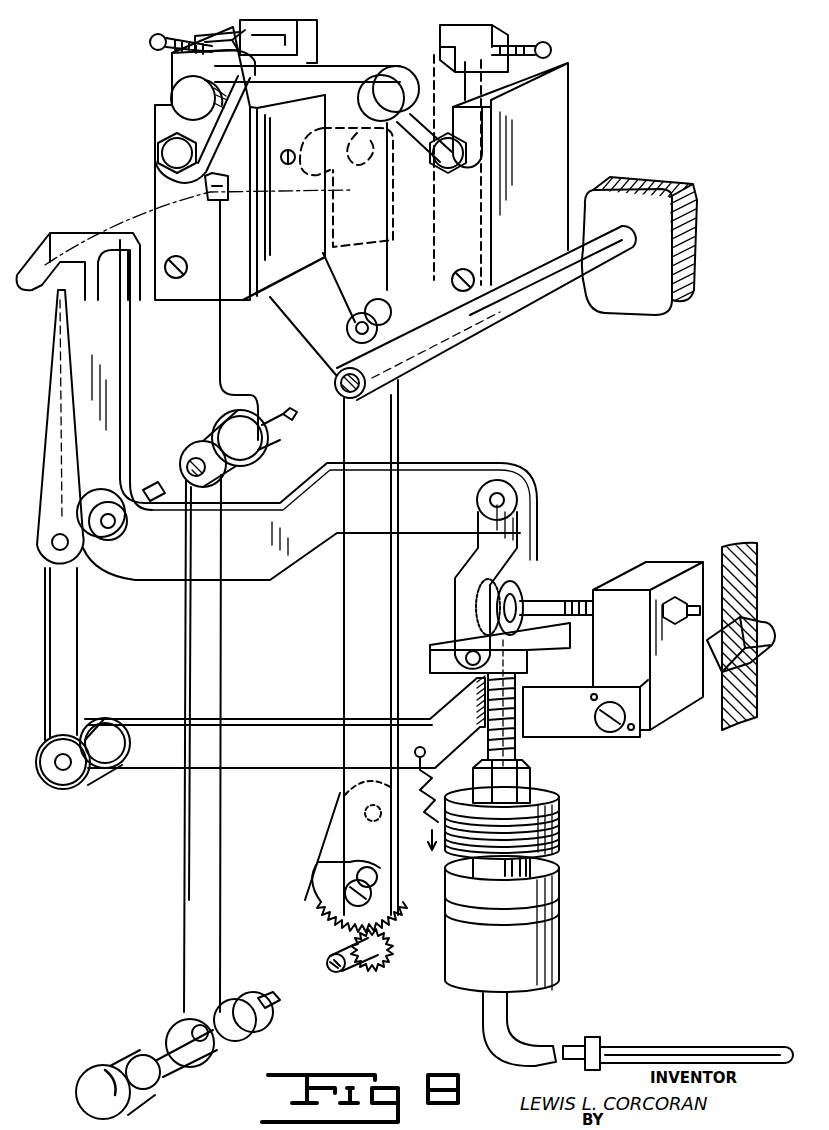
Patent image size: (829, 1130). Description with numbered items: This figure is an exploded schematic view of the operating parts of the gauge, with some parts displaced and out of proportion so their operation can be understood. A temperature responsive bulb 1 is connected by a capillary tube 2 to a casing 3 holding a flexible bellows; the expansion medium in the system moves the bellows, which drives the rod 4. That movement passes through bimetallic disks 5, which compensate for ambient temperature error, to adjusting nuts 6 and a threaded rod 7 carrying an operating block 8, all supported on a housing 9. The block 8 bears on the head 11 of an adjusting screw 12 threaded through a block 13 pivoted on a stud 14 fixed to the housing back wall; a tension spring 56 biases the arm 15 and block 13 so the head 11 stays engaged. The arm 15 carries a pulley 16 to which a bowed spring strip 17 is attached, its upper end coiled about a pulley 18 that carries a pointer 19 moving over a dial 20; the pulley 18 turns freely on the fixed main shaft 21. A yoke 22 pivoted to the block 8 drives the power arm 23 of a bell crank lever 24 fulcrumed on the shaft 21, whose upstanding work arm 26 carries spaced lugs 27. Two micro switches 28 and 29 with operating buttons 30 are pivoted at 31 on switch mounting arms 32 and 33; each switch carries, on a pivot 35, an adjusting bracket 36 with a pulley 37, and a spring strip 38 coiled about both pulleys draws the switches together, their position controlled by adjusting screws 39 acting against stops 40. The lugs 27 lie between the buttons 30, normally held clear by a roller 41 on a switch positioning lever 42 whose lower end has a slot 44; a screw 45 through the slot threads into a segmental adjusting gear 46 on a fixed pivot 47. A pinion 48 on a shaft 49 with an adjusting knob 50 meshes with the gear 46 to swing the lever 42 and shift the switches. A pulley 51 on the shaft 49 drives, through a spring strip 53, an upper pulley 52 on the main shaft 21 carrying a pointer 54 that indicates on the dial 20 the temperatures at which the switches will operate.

The temperature responsive bulb 1 is at (640, 1048).
The capillary tube 2 is at (528, 1040).
The casing 3 is at (560, 905).
The rod 4 is at (548, 870).
The bimetallic disks 5 is at (560, 832).
The adjusting nuts 6 is at (535, 785).
The threaded rod 7 is at (540, 745).
The operating block 8 is at (555, 600).
The housing 9 is at (20, 275).
The head 11 is at (476, 607).
The adjusting screw 12 is at (585, 598).
The block 13 is at (668, 560).
The stud 14 is at (755, 658).
The arm 15 is at (280, 718).
The pulley 16 is at (60, 795).
The spring strip 17 is at (72, 688).
The pulley 18 is at (55, 575).
The pointer 19 is at (48, 468).
The dial 20 is at (18, 300).
The main shaft 21 is at (560, 290).
The yoke 22 is at (540, 530).
The power arm 23 is at (445, 460).
The bell crank lever 24 is at (150, 580).
The work arm 26 is at (350, 268).
The lugs 27 is at (22, 245).
The switch 28 is at (155, 110).
The switch 29 is at (575, 135).
The operating buttons 30 is at (315, 170).
The pivot 31 is at (182, 268).
The switch mounting arm 32 is at (300, 333).
The switch mounting arm 33 is at (497, 22).
The pivot 35 is at (160, 158).
The adjusting bracket 36 is at (225, 26).
The pulley 37 is at (171, 92).
The spring strip 38 is at (340, 68).
The adjusting screws 39 is at (150, 42).
The stops 40 is at (285, 50).
The roller 41 is at (337, 372).
The switch positioning lever 42 is at (405, 405).
The slot 44 is at (315, 868).
The screw 45 is at (330, 922).
The segmental adjusting gear 46 is at (310, 893).
The pivot 47 is at (365, 813).
The pinion 48 is at (385, 965).
The shaft 49 is at (336, 975).
The adjusting knob 50 is at (80, 1080).
The pulley 51 is at (200, 1070).
The upper pulley 52 is at (272, 452).
The spring strip 53 is at (210, 660).
The pointer 54 is at (218, 385).
The tension spring 56 is at (414, 756).